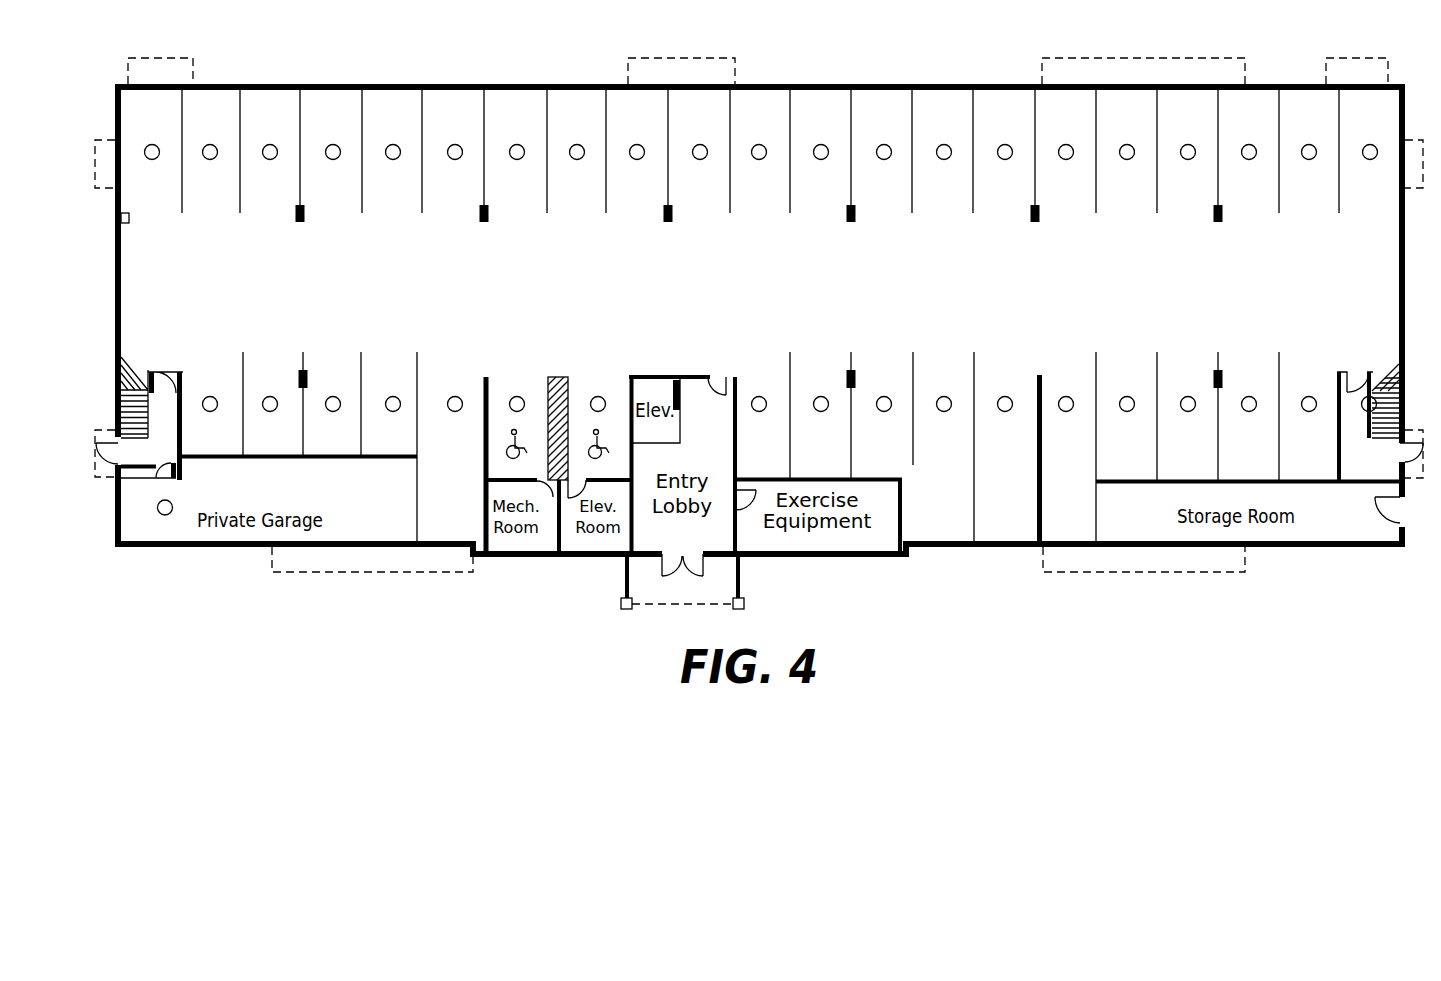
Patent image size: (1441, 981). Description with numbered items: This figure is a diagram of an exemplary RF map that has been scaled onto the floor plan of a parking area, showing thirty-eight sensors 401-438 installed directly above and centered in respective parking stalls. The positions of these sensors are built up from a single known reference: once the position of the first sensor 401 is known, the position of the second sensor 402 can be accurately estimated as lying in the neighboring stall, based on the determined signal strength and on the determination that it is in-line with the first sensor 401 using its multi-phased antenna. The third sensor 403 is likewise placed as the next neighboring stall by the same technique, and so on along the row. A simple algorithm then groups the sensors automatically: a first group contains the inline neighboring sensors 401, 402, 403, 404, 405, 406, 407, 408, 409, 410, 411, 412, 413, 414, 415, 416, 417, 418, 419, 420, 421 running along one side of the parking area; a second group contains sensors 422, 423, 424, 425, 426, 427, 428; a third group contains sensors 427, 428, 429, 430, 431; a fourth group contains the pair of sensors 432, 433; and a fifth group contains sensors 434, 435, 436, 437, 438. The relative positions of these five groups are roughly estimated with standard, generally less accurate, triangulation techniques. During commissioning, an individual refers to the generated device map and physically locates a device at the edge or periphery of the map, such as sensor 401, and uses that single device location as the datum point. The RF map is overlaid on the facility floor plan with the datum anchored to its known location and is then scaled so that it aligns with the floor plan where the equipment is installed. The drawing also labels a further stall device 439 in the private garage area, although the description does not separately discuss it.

The first sensor 401 is at (152, 160).
The second sensor 402 is at (210, 160).
The third sensor 403 is at (270, 160).
The sensor 404 is at (333, 160).
The sensor 405 is at (393, 160).
The sensor 406 is at (455, 160).
The sensor 407 is at (517, 160).
The sensor 408 is at (577, 160).
The sensor 409 is at (637, 160).
The sensor 410 is at (700, 160).
The sensor 411 is at (759, 160).
The sensor 412 is at (821, 160).
The sensor 413 is at (884, 160).
The sensor 414 is at (944, 160).
The sensor 415 is at (1005, 160).
The sensor 416 is at (1066, 160).
The sensor 417 is at (1127, 160).
The sensor 418 is at (1188, 160).
The sensor 419 is at (1249, 160).
The sensor 420 is at (1309, 160).
The sensor 421 is at (1370, 160).
The sensor 422 is at (1309, 396).
The sensor 423 is at (1249, 396).
The sensor 424 is at (1188, 396).
The sensor 425 is at (1127, 396).
The sensor 426 is at (1066, 396).
The sensor 427 is at (1005, 396).
The sensor 428 is at (944, 396).
The sensor 429 is at (884, 396).
The sensor 430 is at (821, 396).
The sensor 431 is at (759, 396).
The sensor 432 is at (598, 396).
The sensor 433 is at (517, 396).
The sensor 434 is at (455, 396).
The sensor 435 is at (393, 396).
The sensor 436 is at (333, 396).
The sensor 437 is at (270, 396).
The sensor 438 is at (210, 396).
The private garage parking space 439 is at (170, 502).